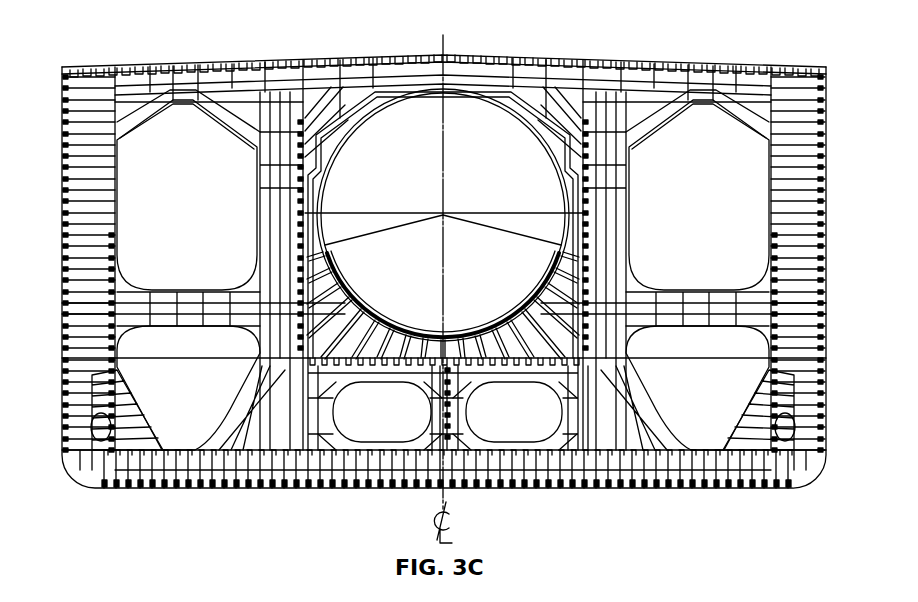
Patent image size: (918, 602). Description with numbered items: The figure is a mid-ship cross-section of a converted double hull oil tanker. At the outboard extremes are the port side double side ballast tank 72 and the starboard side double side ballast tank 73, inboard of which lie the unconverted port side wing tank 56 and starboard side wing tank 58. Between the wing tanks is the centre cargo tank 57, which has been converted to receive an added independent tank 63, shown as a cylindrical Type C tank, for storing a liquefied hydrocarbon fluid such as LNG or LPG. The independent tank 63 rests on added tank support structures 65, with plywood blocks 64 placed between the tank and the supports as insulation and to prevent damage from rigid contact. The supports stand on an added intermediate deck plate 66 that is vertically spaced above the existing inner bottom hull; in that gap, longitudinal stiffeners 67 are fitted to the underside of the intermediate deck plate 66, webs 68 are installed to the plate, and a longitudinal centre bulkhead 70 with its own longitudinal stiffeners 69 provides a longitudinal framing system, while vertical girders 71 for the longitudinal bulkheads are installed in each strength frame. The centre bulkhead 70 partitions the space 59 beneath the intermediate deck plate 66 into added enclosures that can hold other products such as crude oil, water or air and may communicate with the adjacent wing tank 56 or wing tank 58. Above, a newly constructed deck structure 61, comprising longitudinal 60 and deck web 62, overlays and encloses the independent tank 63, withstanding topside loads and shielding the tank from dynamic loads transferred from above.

The port side wing tank 56 is at (188, 190).
The centre cargo tank 57 is at (446, 215).
The starboard side wing tank 58 is at (697, 190).
The space 59 is at (514, 412).
The longitudinal 60 is at (468, 57).
The deck structure 61 is at (522, 57).
The deck web 62 is at (492, 78).
The independent tank 63 is at (322, 189).
The plywood blocks 64 is at (385, 347).
The tank support structures 65 is at (389, 348).
The intermediate deck plate 66 is at (449, 355).
The longitudinal stiffeners 67 is at (377, 366).
The webs 68 is at (426, 376).
The longitudinal stiffeners 69 is at (444, 408).
The longitudinal centre bulkhead 70 is at (460, 415).
The vertical girders 71 is at (578, 414).
The port side double side ballast tank 72 is at (89, 259).
The starboard side double side ballast tank 73 is at (798, 259).